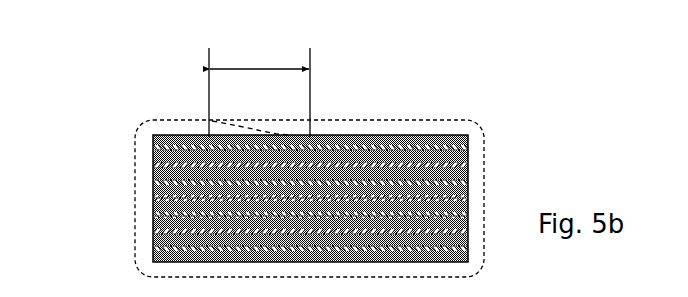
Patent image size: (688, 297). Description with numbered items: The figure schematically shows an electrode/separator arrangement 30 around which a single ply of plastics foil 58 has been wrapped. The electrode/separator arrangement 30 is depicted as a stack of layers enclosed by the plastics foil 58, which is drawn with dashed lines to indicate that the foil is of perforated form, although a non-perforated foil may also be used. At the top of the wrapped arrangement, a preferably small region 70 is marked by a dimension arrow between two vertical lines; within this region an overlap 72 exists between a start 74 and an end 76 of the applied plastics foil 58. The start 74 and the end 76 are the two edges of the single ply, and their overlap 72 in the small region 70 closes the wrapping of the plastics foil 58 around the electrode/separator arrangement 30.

The electrode/separator arrangement 30 is at (62, 244).
The plastics foil 58 is at (484, 149).
The region 70 is at (262, 68).
The overlap 72 is at (264, 129).
The start of the plastics foil 74 is at (311, 136).
The end of the plastics foil 76 is at (226, 127).